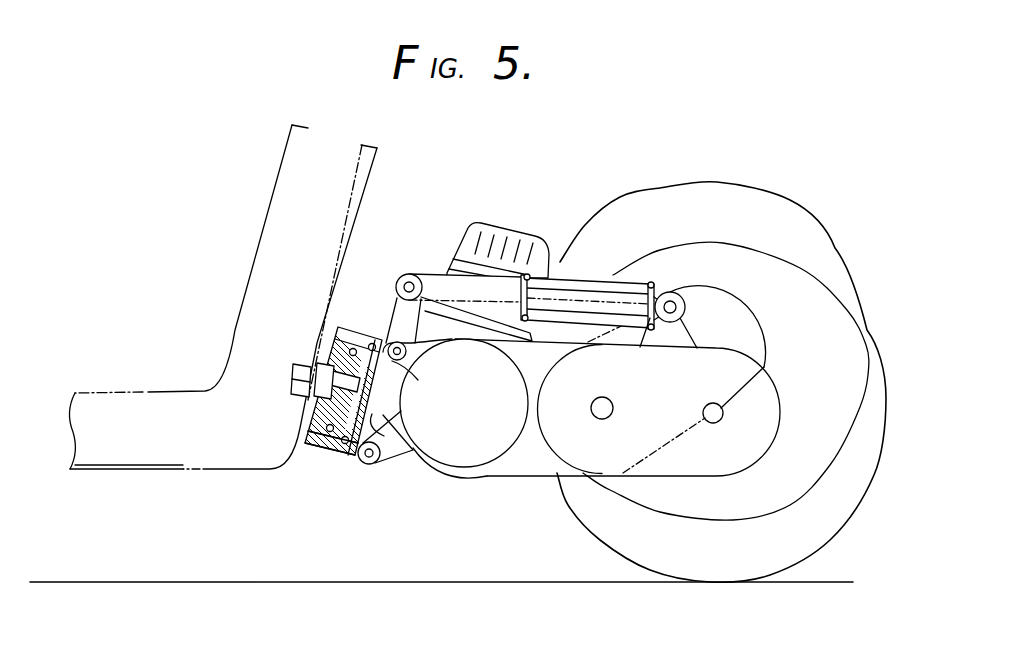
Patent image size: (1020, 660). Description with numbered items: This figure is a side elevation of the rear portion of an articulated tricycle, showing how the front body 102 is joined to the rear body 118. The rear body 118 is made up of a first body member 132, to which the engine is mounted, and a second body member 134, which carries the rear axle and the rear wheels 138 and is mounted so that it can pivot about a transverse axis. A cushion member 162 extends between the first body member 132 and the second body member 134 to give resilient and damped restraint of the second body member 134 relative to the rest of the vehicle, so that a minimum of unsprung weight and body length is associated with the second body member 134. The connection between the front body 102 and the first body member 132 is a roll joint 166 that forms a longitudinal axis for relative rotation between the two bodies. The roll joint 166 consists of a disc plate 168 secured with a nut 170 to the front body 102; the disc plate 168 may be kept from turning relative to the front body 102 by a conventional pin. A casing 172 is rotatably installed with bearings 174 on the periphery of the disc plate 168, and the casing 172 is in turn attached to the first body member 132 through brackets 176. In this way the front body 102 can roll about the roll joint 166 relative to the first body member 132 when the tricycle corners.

The front body 102 is at (145, 404).
The rear body 118 is at (534, 228).
The first body member 132 is at (497, 446).
The second body member 134 is at (762, 405).
The rear wheels 138 is at (807, 553).
The cushion member 162 is at (577, 272).
The roll joint 166 is at (333, 352).
The disc plate 168 is at (340, 446).
The nut 170 is at (294, 381).
The casing 172 is at (415, 450).
The bearings 174 is at (376, 348).
The brackets 176 is at (405, 370).